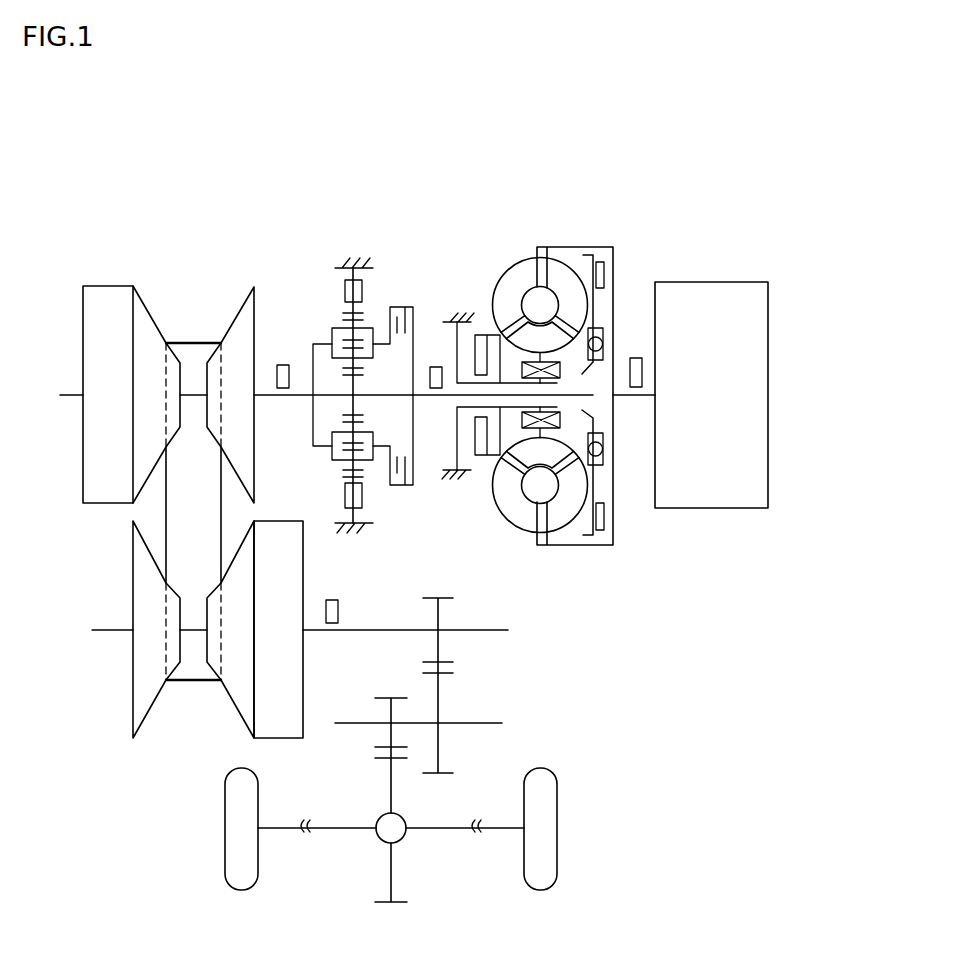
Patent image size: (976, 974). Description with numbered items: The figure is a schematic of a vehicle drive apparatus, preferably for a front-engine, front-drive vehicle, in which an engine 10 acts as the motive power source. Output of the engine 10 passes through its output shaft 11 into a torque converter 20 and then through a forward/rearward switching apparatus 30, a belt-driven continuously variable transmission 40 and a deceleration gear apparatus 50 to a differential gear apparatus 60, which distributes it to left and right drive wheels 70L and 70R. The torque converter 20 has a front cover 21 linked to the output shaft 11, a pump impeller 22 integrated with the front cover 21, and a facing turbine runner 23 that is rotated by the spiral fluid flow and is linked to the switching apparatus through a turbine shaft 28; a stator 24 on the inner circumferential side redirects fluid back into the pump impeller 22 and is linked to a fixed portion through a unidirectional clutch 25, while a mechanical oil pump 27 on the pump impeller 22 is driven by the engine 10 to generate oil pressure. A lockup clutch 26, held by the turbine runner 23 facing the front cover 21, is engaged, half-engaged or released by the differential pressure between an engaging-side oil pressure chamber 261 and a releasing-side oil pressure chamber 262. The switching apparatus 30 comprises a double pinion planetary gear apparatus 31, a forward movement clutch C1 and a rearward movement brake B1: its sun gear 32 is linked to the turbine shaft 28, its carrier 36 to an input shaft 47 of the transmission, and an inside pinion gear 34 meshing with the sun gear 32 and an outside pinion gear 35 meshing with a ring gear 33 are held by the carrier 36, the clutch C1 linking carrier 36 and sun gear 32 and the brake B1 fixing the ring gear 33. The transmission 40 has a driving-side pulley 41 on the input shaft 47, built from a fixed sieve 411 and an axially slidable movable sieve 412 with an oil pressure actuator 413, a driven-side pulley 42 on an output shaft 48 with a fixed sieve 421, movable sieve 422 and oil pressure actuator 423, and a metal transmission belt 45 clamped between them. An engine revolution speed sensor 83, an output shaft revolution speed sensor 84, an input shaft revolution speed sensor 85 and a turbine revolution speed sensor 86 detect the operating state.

The engine 10 is at (708, 281).
The output shaft 11 is at (633, 397).
The torque converter 20 is at (573, 386).
The front cover 21 is at (592, 247).
The pump impeller 22 is at (526, 528).
The turbine runner 23 is at (565, 507).
The stator 24 is at (510, 527).
The unidirectional clutch 25 is at (515, 435).
The lockup clutch 26 is at (617, 432).
The engaging-side oil pressure chamber 261 is at (552, 537).
The releasing-side oil pressure chamber 262 is at (605, 492).
The mechanical oil pump 27 is at (481, 335).
The turbine shaft 28 is at (438, 397).
The forward/rearward switching apparatus 30 is at (347, 342).
The double pinion planetary gear apparatus 31 is at (333, 292).
The sun gear 32 is at (313, 422).
The ring gear 33 is at (363, 487).
The inside pinion gear 34 is at (332, 350).
The outside pinion gear 35 is at (340, 318).
The carrier 36 is at (373, 444).
The rearward movement brake B1 is at (363, 288).
The forward movement clutch C1 is at (362, 233).
The belt-driven continuously variable transmission 40 is at (210, 504).
The driving-side pulley 41 is at (131, 341).
The fixed sieve 411 is at (240, 327).
The movable sieve 412 is at (152, 317).
The oil pressure actuator 413 is at (95, 342).
The driven-side pulley 42 is at (207, 683).
The fixed sieve 421 is at (140, 697).
The movable sieve 422 is at (242, 698).
The oil pressure actuator 423 is at (293, 582).
The transmission belt 45 is at (187, 342).
The input shaft 47 is at (283, 397).
The output shaft 48 is at (382, 632).
The deceleration gear apparatus 50 is at (473, 707).
The differential gear apparatus 60 is at (380, 838).
The left drive wheel 70L is at (225, 840).
The right drive wheel 70R is at (558, 835).
The engine revolution speed sensor 83 is at (636, 357).
The output shaft revolution speed sensor 84 is at (336, 598).
The input shaft revolution speed sensor 85 is at (283, 363).
The turbine revolution speed sensor 86 is at (436, 367).